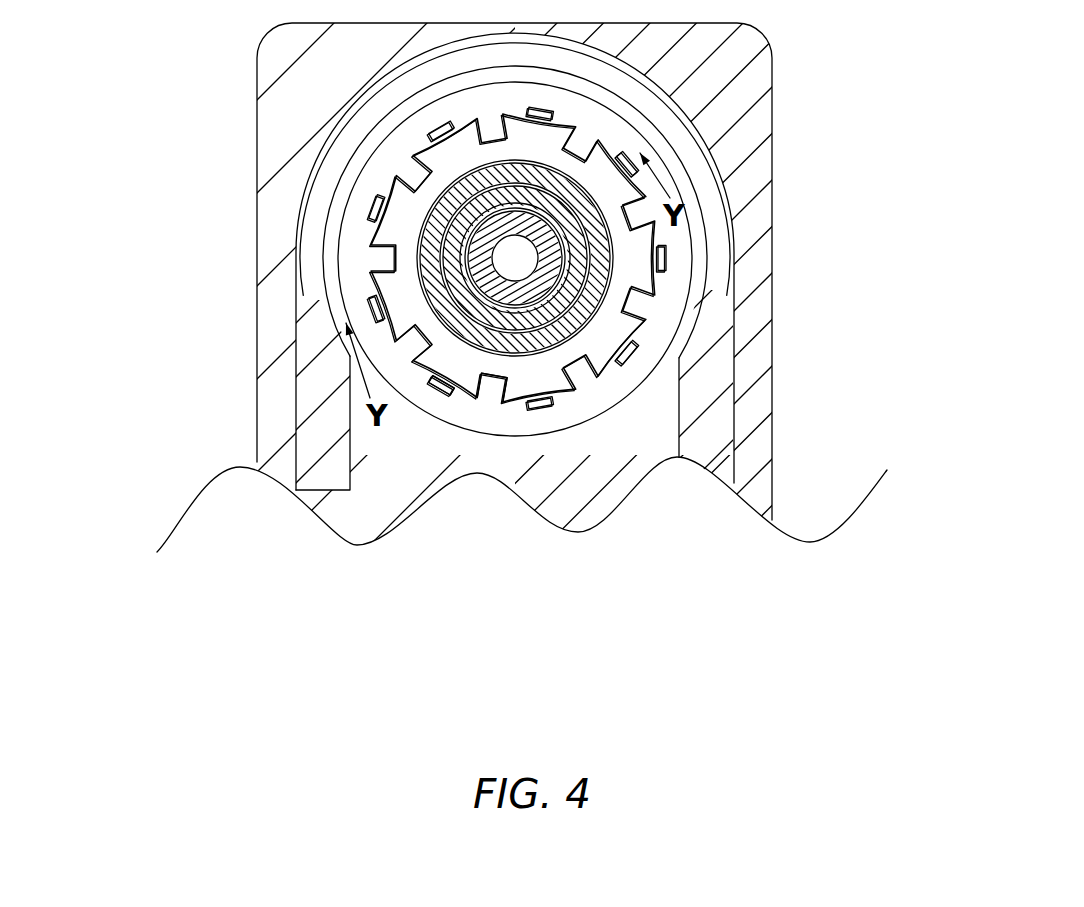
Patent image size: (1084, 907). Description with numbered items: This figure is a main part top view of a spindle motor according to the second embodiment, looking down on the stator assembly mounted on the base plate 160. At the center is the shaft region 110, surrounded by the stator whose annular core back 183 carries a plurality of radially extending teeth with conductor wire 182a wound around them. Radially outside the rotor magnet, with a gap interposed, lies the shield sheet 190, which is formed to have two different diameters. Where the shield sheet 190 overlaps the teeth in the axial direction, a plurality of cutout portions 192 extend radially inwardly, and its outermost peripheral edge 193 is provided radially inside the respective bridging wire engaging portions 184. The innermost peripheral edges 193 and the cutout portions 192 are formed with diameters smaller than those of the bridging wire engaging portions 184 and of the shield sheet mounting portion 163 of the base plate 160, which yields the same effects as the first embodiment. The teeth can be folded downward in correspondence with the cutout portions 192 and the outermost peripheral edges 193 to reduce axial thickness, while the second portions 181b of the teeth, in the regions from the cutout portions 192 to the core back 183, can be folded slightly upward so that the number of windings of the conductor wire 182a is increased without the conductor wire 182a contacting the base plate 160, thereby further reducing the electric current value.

The rotary shaft with bearing 110 is at (432, 230).
The base plate 160 is at (220, 165).
The shield sheet mounting portion 163 is at (330, 240).
The second portions 181b is at (580, 140).
The conductor wire 182a is at (660, 303).
The core back 183 is at (660, 318).
The bridging wire engaging portions 184 is at (625, 350).
The shield sheet 190 is at (578, 380).
The cutout portions 192 is at (490, 400).
The outermost peripheral edge 193 is at (460, 398).